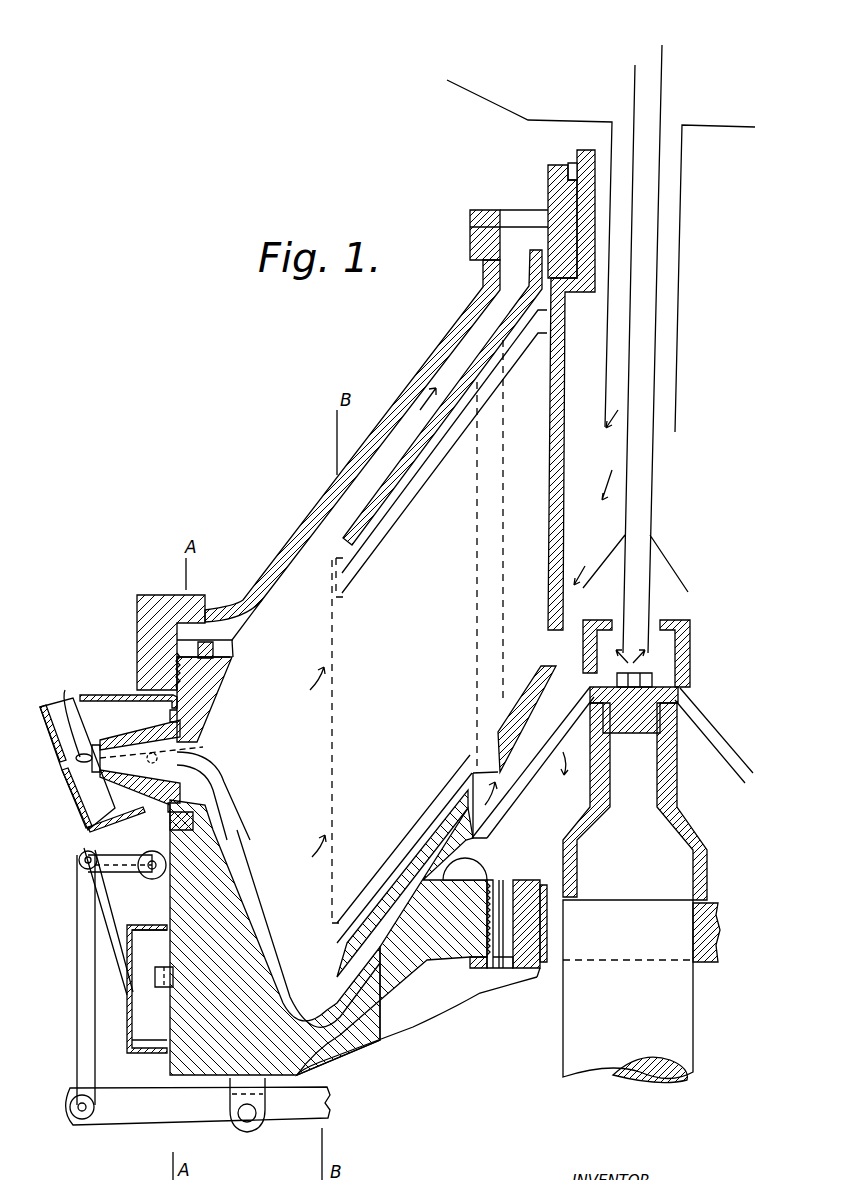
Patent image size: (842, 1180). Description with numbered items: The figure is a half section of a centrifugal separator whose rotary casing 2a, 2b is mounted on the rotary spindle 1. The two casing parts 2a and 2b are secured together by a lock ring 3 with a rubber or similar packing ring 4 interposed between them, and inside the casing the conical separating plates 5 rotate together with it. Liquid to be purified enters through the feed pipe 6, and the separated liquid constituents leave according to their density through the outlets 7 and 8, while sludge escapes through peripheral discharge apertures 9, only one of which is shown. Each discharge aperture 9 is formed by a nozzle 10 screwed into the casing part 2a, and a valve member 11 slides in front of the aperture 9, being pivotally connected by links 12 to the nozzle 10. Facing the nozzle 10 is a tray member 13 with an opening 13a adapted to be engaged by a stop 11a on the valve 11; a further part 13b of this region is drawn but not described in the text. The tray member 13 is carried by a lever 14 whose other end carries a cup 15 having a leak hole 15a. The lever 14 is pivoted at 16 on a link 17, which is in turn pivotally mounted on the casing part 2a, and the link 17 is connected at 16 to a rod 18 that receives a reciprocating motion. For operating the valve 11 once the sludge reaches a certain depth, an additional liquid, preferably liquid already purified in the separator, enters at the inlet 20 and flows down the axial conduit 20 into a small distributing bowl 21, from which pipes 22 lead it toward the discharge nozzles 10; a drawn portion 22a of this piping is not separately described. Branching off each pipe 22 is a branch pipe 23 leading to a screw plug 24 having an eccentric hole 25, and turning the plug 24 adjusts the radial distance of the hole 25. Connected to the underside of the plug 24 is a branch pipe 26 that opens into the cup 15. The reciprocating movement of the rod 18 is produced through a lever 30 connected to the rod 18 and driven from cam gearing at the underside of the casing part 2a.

The rotary spindle 1 is at (685, 978).
The casing part 2a is at (197, 1060).
The casing part 2b is at (246, 600).
The lock ring 3 is at (162, 602).
The packing ring 4 is at (232, 650).
The conical separating plates 5 is at (350, 577).
The feed pipe 6 is at (622, 130).
The outlet 7 is at (522, 242).
The outlet 8 is at (574, 172).
The peripheral discharge aperture 9 is at (148, 806).
The nozzle 10 is at (157, 732).
The valve member 11 is at (93, 743).
The stop 11a is at (71, 705).
The links 12 is at (166, 744).
The tray member 13 is at (40, 720).
The opening 13a is at (58, 767).
The guard plate 13b is at (115, 692).
The lever 14 is at (108, 910).
The cup 15 is at (127, 1010).
The leak hole 15a is at (122, 1040).
The pivot 16 is at (78, 860).
The link 17 is at (110, 858).
The rod 18 is at (80, 972).
The inlet 20 is at (647, 52).
The distributing bowl 21 is at (665, 625).
The pipes 22 is at (258, 850).
The duct outlet pipe 22a is at (227, 770).
The branch pipe 23 is at (523, 863).
The screw plug 24 is at (530, 970).
The eccentric hole 25 is at (505, 970).
The branch pipe 26 is at (408, 1028).
The lever 30 is at (213, 1117).